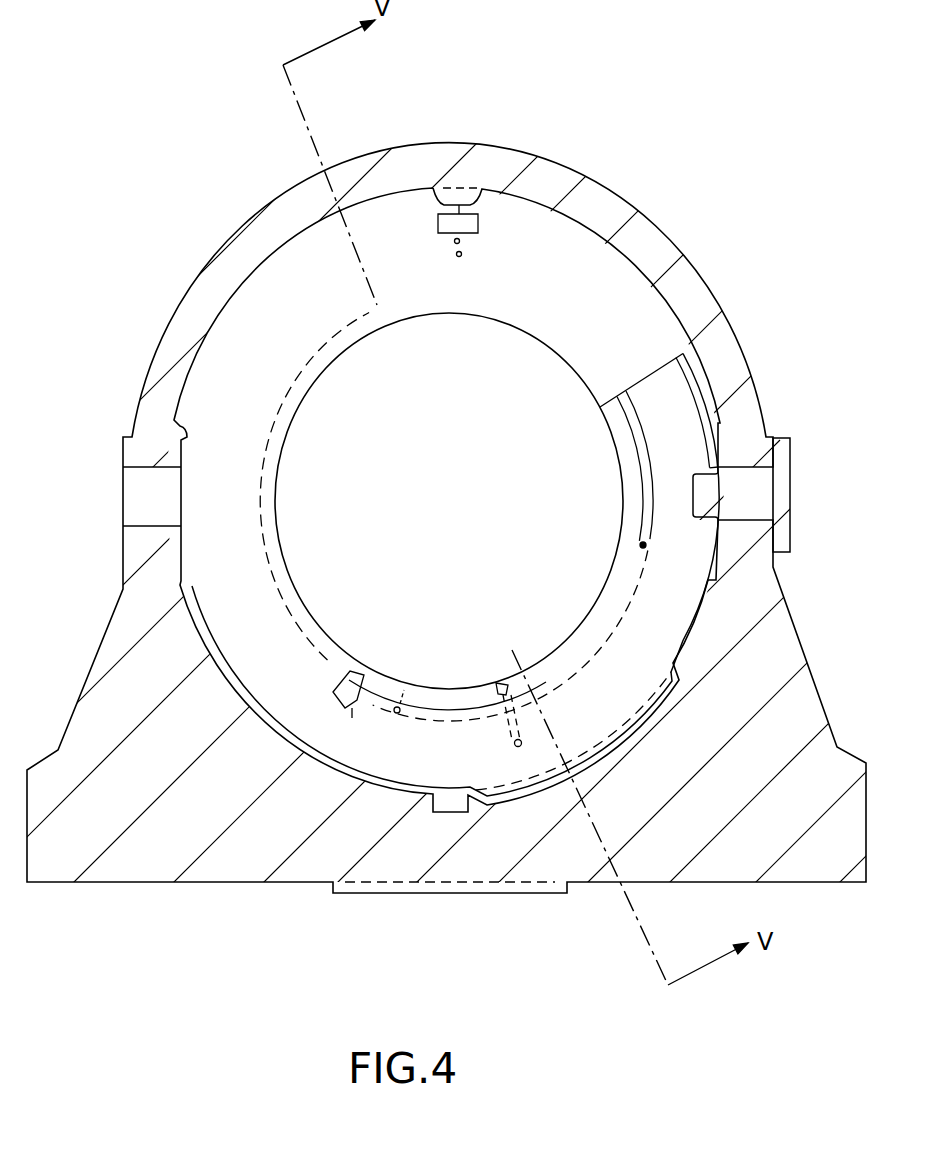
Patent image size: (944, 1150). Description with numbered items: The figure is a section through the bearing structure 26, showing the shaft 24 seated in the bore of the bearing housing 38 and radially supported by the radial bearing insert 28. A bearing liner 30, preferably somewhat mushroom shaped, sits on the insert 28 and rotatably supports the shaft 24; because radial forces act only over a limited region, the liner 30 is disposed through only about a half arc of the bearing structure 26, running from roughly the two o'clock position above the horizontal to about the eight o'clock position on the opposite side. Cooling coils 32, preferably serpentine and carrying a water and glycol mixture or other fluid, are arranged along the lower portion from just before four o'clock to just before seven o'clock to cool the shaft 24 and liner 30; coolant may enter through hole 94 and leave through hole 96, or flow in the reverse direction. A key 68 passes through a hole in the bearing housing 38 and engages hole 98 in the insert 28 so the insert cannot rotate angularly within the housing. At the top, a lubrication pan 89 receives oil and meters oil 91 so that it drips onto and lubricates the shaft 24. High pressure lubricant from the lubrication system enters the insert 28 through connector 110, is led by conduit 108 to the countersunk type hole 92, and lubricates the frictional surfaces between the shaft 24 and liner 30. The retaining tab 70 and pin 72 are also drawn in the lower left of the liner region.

The shaft 24 is at (471, 455).
The bearing structure 26 is at (157, 985).
The radial bearing insert 28 is at (662, 624).
The bearing liner 30 is at (618, 420).
The cooling coils 32 is at (442, 717).
The bearing housing 38 is at (750, 463).
The key 68 is at (760, 490).
The retaining tab 70 is at (333, 697).
The retaining pin 72 is at (352, 712).
The lubrication pan 89 is at (480, 224).
The oil 91 is at (462, 256).
The countersunk type hole 92 is at (498, 690).
The hole 94 is at (395, 713).
The hole 96 is at (645, 546).
The hole 98 is at (700, 467).
The conduit 108 is at (516, 746).
The connector 110 is at (524, 742).